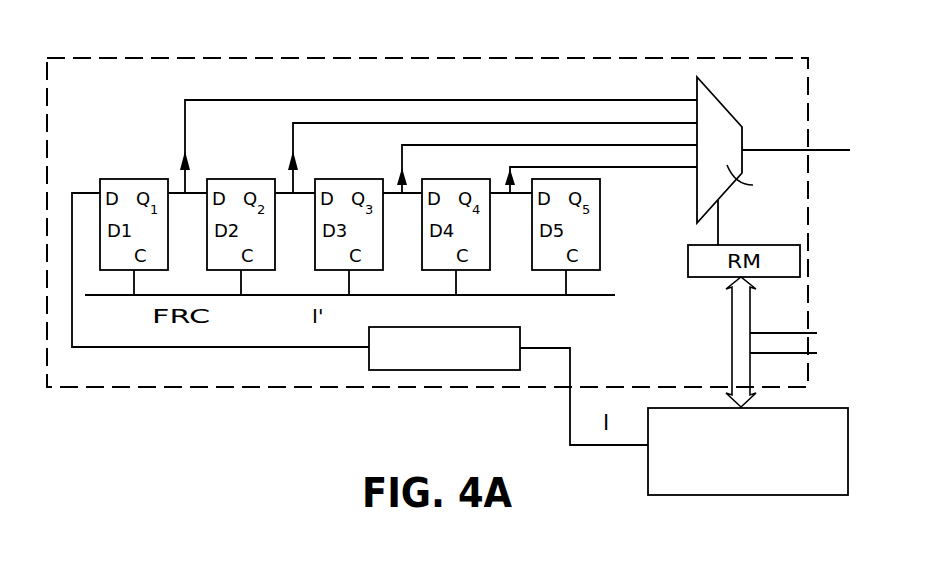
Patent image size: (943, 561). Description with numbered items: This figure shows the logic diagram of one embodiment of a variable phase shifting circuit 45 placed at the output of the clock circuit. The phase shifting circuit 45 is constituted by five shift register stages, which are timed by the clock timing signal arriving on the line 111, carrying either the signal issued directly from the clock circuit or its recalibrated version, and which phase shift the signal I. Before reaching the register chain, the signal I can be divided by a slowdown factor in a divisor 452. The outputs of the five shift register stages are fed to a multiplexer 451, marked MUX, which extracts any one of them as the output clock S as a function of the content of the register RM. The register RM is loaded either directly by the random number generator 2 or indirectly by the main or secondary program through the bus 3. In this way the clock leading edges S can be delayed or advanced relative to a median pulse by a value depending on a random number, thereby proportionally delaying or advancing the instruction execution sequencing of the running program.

The phase shifting circuit 45 is at (90, 389).
The multiplexer 451 is at (717, 95).
The divisor 452 is at (520, 333).
The feedback line 111 is at (127, 349).
The bus 3 is at (766, 333).
The random number generator 2 is at (648, 467).